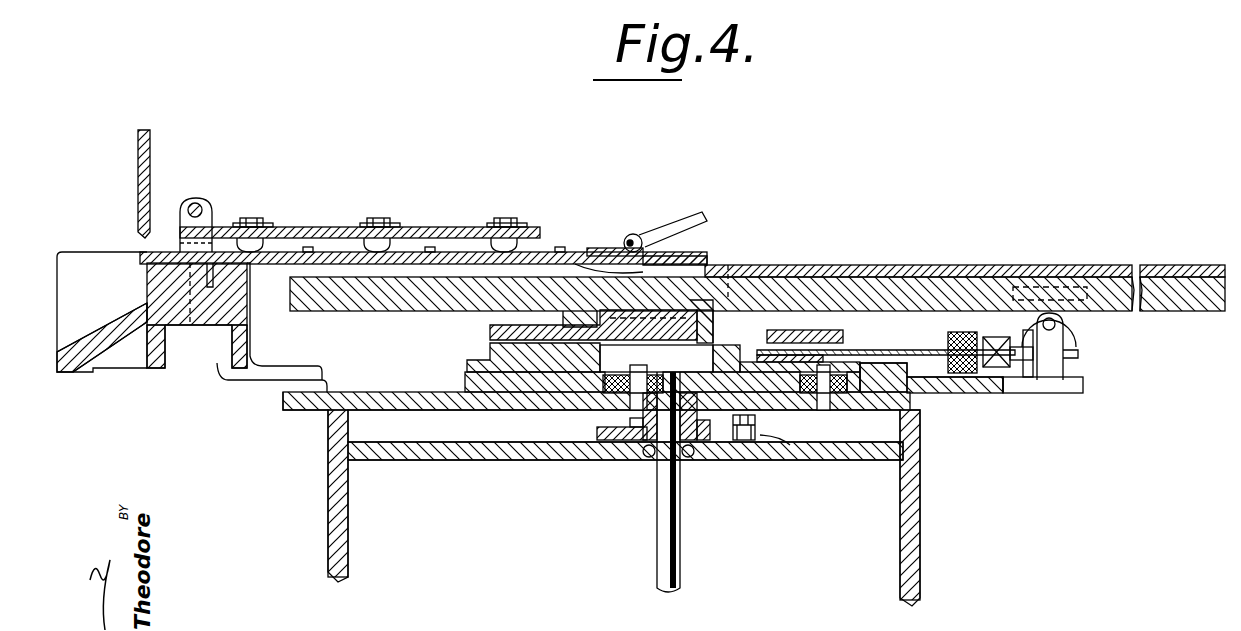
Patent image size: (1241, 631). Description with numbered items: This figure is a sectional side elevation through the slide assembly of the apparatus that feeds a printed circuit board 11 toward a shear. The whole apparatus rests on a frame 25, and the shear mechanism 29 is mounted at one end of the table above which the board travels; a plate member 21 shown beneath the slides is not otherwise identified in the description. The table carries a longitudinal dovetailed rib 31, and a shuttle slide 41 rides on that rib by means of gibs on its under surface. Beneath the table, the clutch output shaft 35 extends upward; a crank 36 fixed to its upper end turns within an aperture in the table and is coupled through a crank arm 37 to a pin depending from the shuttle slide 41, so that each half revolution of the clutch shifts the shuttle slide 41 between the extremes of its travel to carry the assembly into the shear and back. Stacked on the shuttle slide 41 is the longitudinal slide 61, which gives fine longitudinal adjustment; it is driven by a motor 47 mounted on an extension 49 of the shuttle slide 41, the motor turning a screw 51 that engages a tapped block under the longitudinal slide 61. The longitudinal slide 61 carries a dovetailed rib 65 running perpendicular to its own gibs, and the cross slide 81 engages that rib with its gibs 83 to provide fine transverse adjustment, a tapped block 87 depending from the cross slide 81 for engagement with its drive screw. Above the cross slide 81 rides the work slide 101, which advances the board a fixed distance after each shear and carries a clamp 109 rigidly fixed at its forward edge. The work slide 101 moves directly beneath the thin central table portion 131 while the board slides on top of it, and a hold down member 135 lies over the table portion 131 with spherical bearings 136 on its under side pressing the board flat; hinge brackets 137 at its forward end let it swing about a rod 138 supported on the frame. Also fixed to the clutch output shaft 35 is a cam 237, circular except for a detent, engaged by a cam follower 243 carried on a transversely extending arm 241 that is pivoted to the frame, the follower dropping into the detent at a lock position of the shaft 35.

The printed circuit board 11 is at (140, 252).
The plate 21 is at (382, 380).
The frame 25 is at (217, 372).
The shear mechanism 29 is at (138, 172).
The dovetailed rib 31 is at (466, 382).
The output shaft 35 is at (660, 538).
The crank 36 is at (615, 396).
The crank arm 37 is at (694, 376).
The shuttle slide 41 is at (488, 350).
The motor 47 is at (1073, 328).
The extension 49 is at (1050, 384).
The screw 51 is at (898, 352).
The longitudinal slide 61 is at (492, 326).
The dovetailed rib 65 is at (784, 326).
The cross slide 81 is at (895, 290).
The gibs 83 is at (560, 325).
The tapped block 87 is at (729, 265).
The work slide 101 is at (770, 268).
The clamp 109 is at (638, 236).
The central table portion 131 is at (462, 258).
The hold down member 135 is at (425, 228).
The spherical bearings 136 is at (327, 232).
The hinge brackets 137 is at (212, 212).
The rod 138 is at (198, 206).
The cam 237 is at (728, 428).
The transversely extending arm 241 is at (757, 428).
The cam follower 243 is at (790, 445).